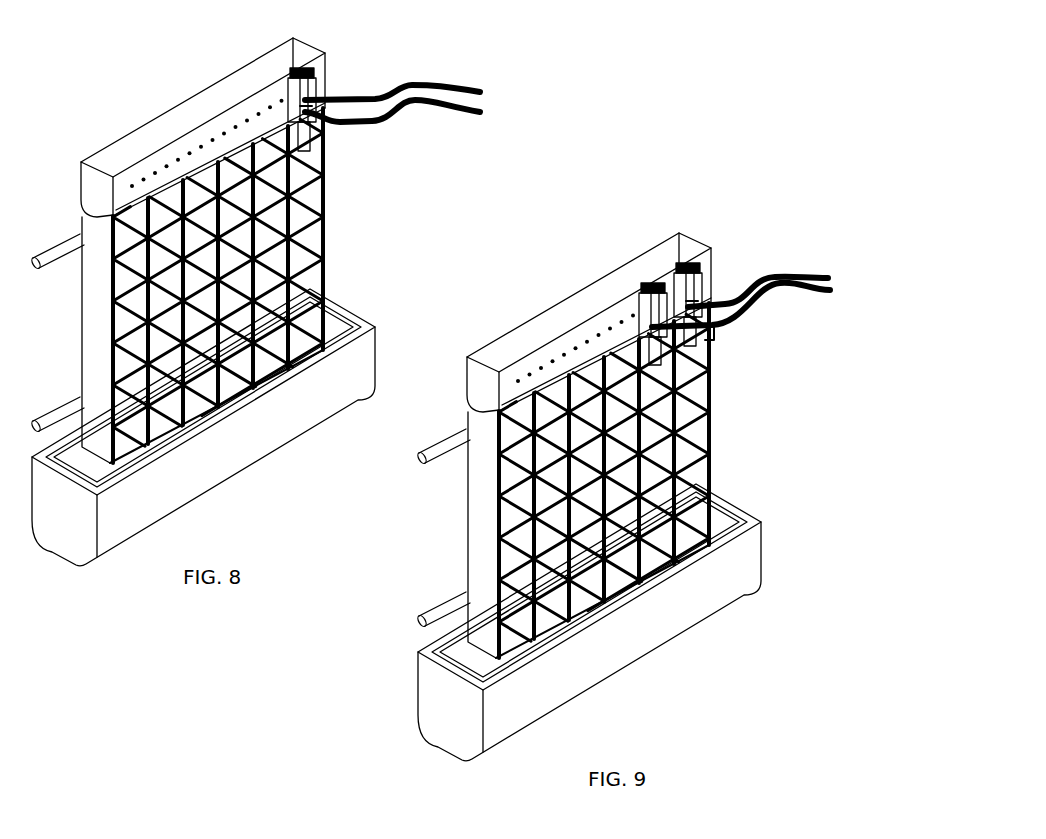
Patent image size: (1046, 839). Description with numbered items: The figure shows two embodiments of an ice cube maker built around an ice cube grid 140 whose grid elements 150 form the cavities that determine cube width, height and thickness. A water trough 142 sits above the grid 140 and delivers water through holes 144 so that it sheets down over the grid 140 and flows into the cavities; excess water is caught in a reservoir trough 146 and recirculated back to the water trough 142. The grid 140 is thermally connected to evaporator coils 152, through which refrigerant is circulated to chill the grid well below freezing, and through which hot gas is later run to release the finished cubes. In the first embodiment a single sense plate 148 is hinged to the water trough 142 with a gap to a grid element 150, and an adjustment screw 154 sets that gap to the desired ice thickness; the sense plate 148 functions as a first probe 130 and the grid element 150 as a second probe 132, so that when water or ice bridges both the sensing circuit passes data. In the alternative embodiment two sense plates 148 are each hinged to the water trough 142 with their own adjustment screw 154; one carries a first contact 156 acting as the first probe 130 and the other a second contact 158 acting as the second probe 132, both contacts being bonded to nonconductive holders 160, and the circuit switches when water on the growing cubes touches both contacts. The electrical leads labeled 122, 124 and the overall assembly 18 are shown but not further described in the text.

In FIG. 8, the heating assembly 18 is at (408, 128).
In FIG. 9, the heating assembly 18 is at (799, 366).
In FIG. 8, the first electrical lead 122 is at (460, 84).
In FIG. 9, the first electrical lead 122 is at (823, 300).
In FIG. 8, the second electrical lead 124 is at (474, 114).
In FIG. 9, the second electrical lead 124 is at (818, 267).
In FIG. 8, the first probe 130 is at (313, 128).
In FIG. 9, the first probe 130 is at (695, 335).
In FIG. 8, the second probe 132 is at (331, 244).
In FIG. 9, the second probe 132 is at (713, 407).
In FIG. 8, the ice cube grid 140 is at (95, 350).
In FIG. 9, the ice cube grid 140 is at (481, 545).
In FIG. 8, the water trough 142 is at (92, 183).
In FIG. 9, the water trough 142 is at (478, 378).
In FIG. 8, the holes 144 is at (121, 193).
In FIG. 9, the holes 144 is at (507, 388).
In FIG. 8, the reservoir trough 146 is at (65, 540).
In FIG. 9, the reservoir trough 146 is at (451, 735).
In FIG. 8, the sense plate 148 is at (327, 92).
In FIG. 9, the sense plate 148 is at (655, 323).
In FIG. 8, the grid elements 150 is at (313, 300).
In FIG. 9, the grid elements 150 is at (700, 492).
In FIG. 8, the evaporator coils 152 is at (60, 255).
In FIG. 9, the evaporator coils 152 is at (446, 450).
In FIG. 8, the adjustment screw 154 is at (289, 100).
In FIG. 9, the adjustment screw 154 is at (648, 305).
In FIG. 9, the first contact 156 is at (712, 335).
In FIG. 9, the second contact 158 is at (652, 362).
In FIG. 8, the nonconductive holders 160 is at (302, 70).
In FIG. 9, the nonconductive holders 160 is at (660, 287).